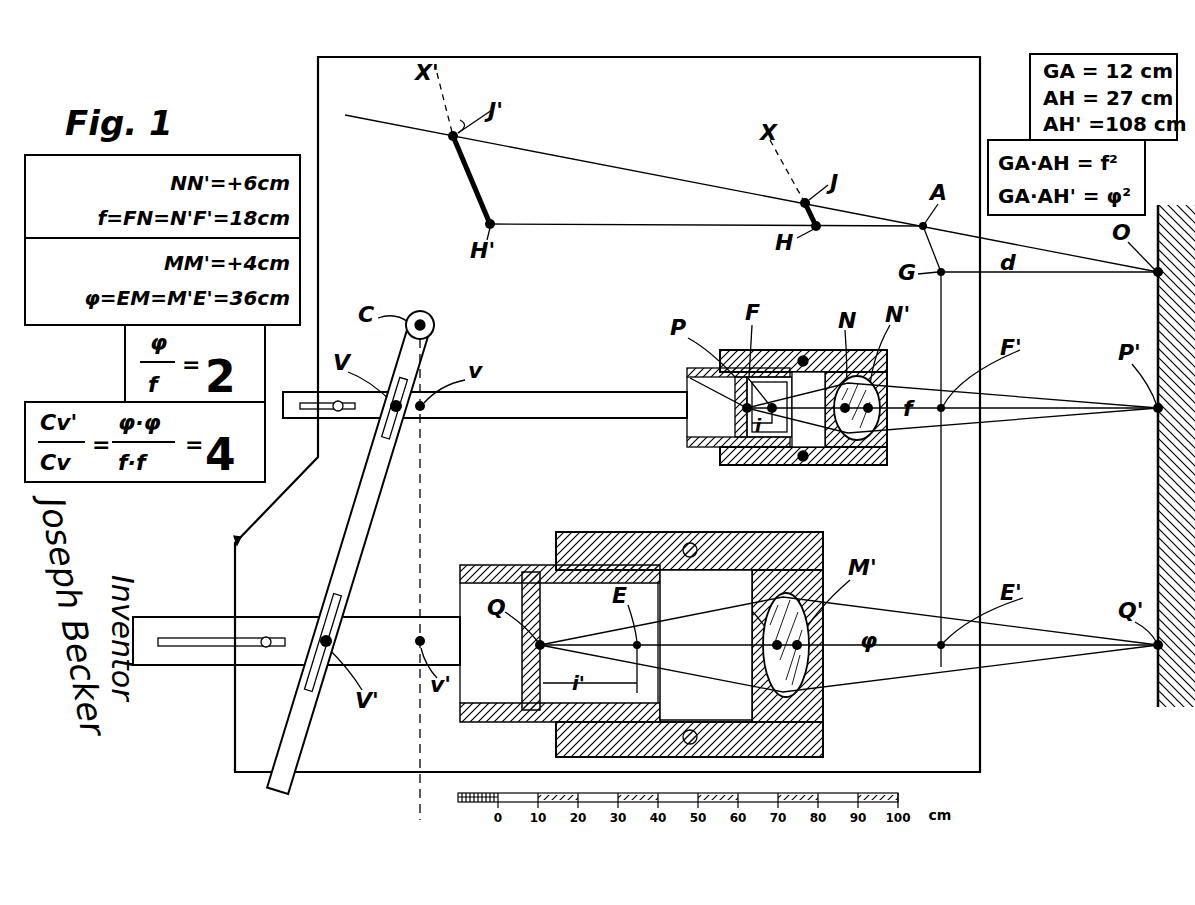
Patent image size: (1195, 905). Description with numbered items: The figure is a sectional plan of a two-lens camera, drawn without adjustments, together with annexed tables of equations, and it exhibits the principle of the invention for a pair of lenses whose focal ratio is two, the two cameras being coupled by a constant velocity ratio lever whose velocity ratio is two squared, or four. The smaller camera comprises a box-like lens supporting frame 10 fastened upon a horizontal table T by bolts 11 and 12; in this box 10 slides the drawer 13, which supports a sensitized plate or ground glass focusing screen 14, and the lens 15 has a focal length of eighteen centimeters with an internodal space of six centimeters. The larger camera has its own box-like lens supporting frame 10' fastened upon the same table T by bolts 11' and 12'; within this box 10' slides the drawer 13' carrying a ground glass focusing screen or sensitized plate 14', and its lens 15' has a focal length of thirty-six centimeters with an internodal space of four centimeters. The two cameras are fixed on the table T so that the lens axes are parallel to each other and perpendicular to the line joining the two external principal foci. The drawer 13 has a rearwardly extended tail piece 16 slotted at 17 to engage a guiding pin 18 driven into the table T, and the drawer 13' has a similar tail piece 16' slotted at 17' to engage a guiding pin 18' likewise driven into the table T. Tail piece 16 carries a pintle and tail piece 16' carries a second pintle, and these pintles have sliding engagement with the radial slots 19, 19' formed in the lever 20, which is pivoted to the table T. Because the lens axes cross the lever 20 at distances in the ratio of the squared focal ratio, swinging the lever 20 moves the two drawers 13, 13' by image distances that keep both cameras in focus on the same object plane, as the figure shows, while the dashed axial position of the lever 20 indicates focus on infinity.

The box-like lens supporting frame 10 is at (803, 422).
The box-like lens supporting frame 10' is at (689, 625).
The bolt 11 is at (802, 340).
The bolt 11' is at (690, 523).
The bolt 12 is at (805, 472).
The bolt 12' is at (694, 714).
The drawer 13 is at (710, 416).
The drawer 13' is at (552, 619).
The sensitized plate or ground glass focusing screen 14 is at (720, 407).
The ground glass focusing screen or sensitized plate 14' is at (506, 641).
The lens 15 is at (862, 436).
The lens 15' is at (825, 657).
The tail piece 16 is at (485, 380).
The tail piece 16' is at (296, 620).
The slot 17 is at (317, 379).
The slot 17' is at (221, 667).
The guiding pin 18 is at (311, 424).
The guiding pin 18' is at (260, 670).
The radial slot 19 is at (396, 409).
The radial slot 19' is at (322, 643).
The lever 20 is at (353, 552).
The table T is at (985, 745).